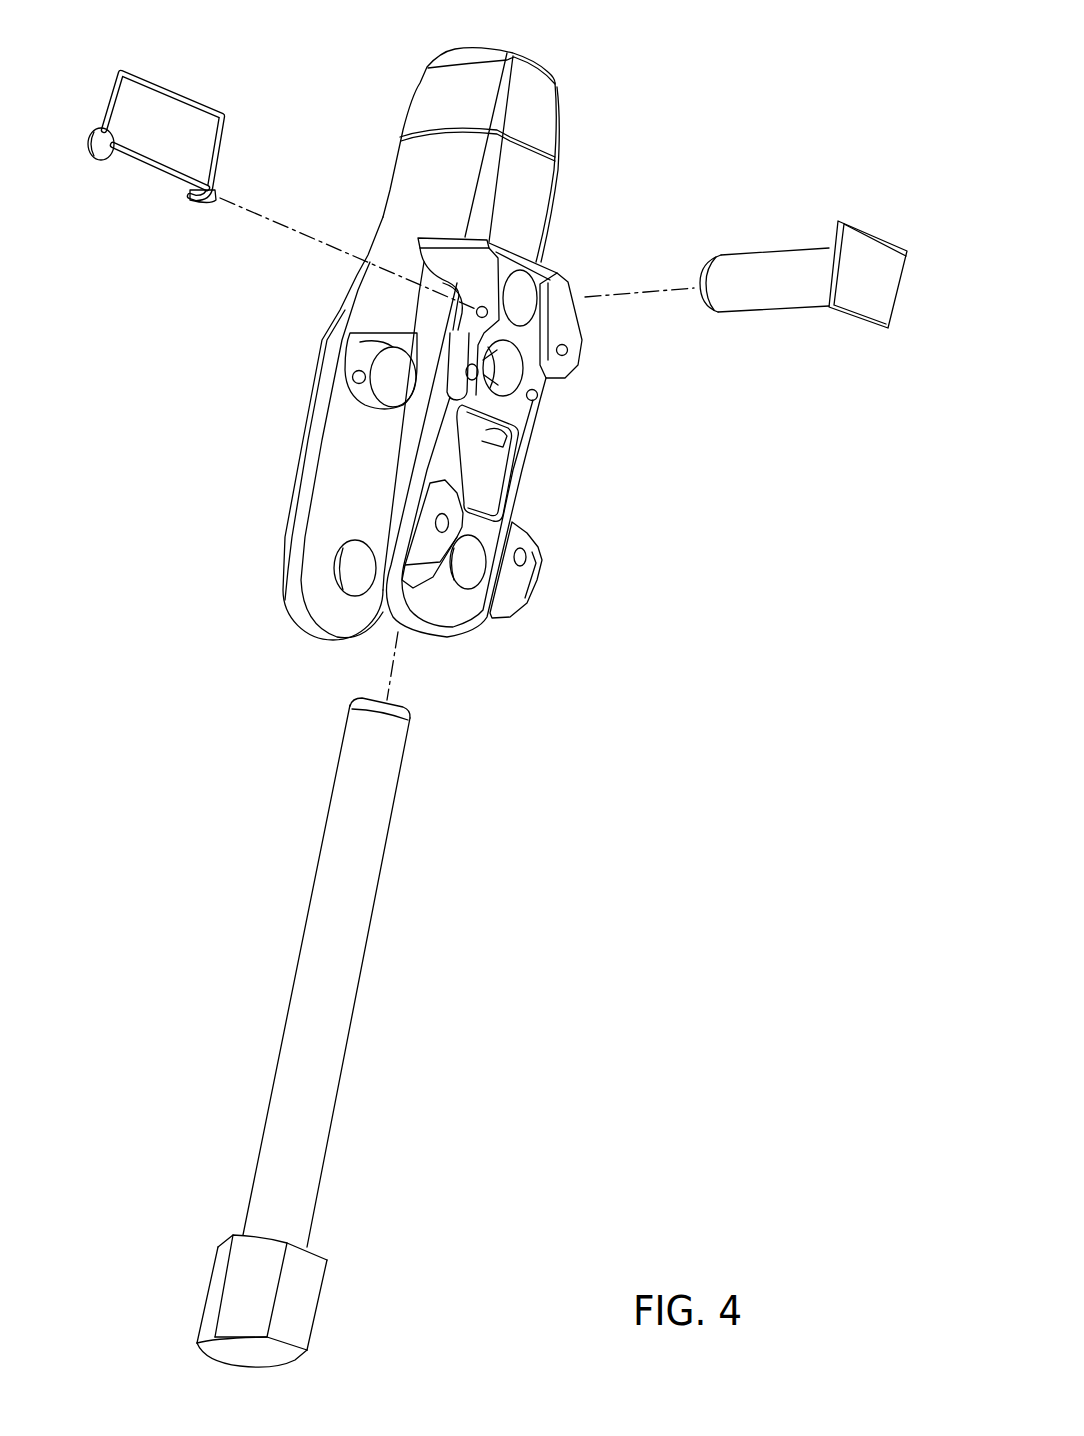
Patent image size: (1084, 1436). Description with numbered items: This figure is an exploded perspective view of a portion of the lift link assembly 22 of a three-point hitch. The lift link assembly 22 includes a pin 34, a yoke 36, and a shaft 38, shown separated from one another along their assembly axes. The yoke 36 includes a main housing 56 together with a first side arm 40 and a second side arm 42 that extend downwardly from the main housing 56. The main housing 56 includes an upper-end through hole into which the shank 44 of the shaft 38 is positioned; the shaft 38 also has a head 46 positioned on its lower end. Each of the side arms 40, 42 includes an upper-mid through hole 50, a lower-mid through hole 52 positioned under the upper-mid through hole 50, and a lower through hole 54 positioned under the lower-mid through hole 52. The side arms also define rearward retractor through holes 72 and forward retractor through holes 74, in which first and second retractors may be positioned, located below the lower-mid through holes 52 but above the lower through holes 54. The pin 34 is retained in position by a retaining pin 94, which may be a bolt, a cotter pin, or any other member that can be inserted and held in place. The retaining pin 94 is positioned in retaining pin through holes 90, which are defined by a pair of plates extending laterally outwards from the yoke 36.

The lift link assembly 22 is at (807, 128).
The pin 34 is at (866, 230).
The yoke 36 is at (605, 92).
The shaft 38 is at (438, 958).
The first side arm 40 is at (290, 613).
The second side arm 42 is at (455, 637).
The shank 44 is at (396, 795).
The head 46 is at (212, 1273).
The upper-mid through hole 50 is at (518, 298).
The lower-mid through hole 52 is at (388, 412).
The lower through hole 54 is at (354, 598).
The main housing 56 is at (557, 126).
The rearward retractor through holes 72 is at (468, 366).
The forward retractor through holes 74 is at (540, 400).
The retaining pin through holes 90 is at (483, 257).
The retaining pin 94 is at (175, 86).